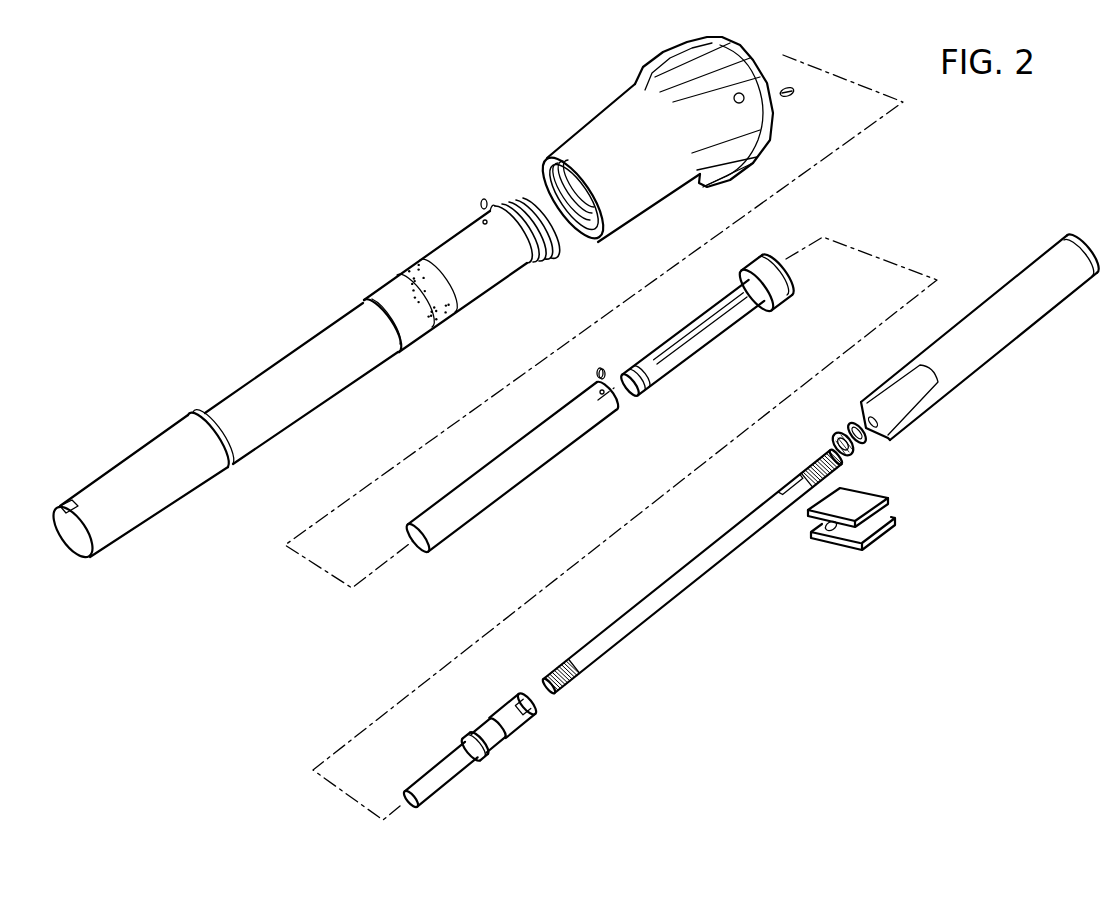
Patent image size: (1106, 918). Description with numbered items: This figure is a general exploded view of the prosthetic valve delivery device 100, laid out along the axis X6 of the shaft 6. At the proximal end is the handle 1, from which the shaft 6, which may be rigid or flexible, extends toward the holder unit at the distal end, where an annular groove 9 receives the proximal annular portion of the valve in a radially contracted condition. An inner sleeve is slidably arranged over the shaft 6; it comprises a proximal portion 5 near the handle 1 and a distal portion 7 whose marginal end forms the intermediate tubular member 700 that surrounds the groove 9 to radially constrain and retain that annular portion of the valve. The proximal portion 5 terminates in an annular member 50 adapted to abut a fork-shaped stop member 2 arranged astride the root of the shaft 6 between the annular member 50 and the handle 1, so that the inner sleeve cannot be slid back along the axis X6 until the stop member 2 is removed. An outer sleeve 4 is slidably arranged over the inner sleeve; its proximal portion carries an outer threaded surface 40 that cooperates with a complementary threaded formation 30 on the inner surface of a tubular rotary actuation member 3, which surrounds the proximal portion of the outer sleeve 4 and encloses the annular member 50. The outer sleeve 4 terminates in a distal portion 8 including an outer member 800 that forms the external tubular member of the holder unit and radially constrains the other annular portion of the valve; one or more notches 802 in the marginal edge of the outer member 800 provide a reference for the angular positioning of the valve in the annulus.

The prosthetic valve delivery device 100 is at (217, 196).
The handle 1 is at (998, 361).
The stop member 2 is at (832, 543).
The tubular rotary actuation member 3 is at (604, 112).
The threaded formation 30 is at (546, 188).
The outer sleeve 4 is at (494, 292).
The outer threaded surface 40 is at (551, 253).
The proximal portion of the inner sleeve 5 is at (673, 364).
The annular member 50 is at (789, 309).
The shaft 6 is at (669, 611).
The distal portion of the inner sleeve 7 is at (518, 492).
The intermediate tubular member 700 is at (436, 546).
The distal portion of the outer sleeve 8 is at (290, 351).
The outer member 800 is at (128, 538).
The notch 802 is at (66, 503).
The annular groove 9 is at (501, 757).
The axis of the shaft X6 is at (383, 573).